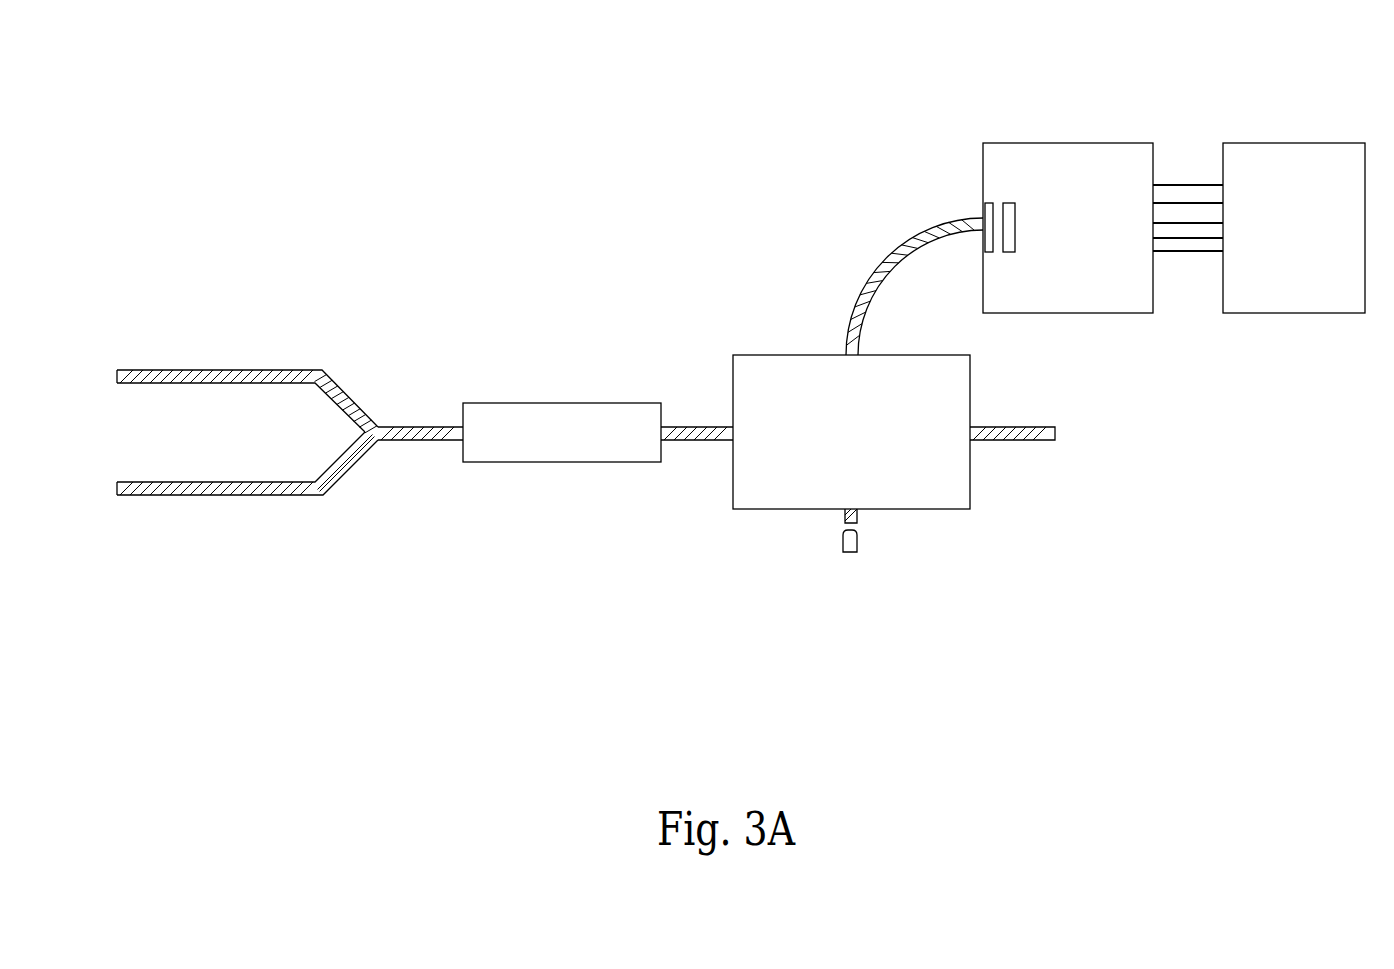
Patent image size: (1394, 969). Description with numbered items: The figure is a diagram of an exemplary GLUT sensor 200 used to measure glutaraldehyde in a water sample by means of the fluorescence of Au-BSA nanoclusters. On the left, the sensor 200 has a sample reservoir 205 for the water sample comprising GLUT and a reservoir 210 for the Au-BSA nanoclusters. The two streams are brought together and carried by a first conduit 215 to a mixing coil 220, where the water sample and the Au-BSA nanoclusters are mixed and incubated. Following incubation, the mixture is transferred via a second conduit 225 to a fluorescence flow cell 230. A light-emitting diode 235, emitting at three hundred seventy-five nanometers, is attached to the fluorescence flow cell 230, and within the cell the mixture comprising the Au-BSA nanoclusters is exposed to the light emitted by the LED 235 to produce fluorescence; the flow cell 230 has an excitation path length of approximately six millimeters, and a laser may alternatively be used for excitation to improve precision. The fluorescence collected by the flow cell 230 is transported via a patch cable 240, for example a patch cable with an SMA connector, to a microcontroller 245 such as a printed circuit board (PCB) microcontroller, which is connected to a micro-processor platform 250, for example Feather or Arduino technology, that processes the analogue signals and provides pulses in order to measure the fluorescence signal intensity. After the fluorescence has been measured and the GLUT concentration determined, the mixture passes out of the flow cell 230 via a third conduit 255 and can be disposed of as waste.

The GLUT sensor 200 is at (202, 108).
The sample reservoir 205 is at (152, 370).
The reservoir 210 is at (152, 495).
The first conduit 215 is at (422, 440).
The mixing coil 220 is at (565, 462).
The second conduit 225 is at (705, 440).
The fluorescence flow cell 230 is at (732, 373).
The light-emitting diode 235 is at (842, 540).
The patch cable 240 is at (880, 260).
The microcontroller 245 is at (1085, 143).
The micro-processor platform 250 is at (1268, 143).
The third conduit 255 is at (1013, 440).